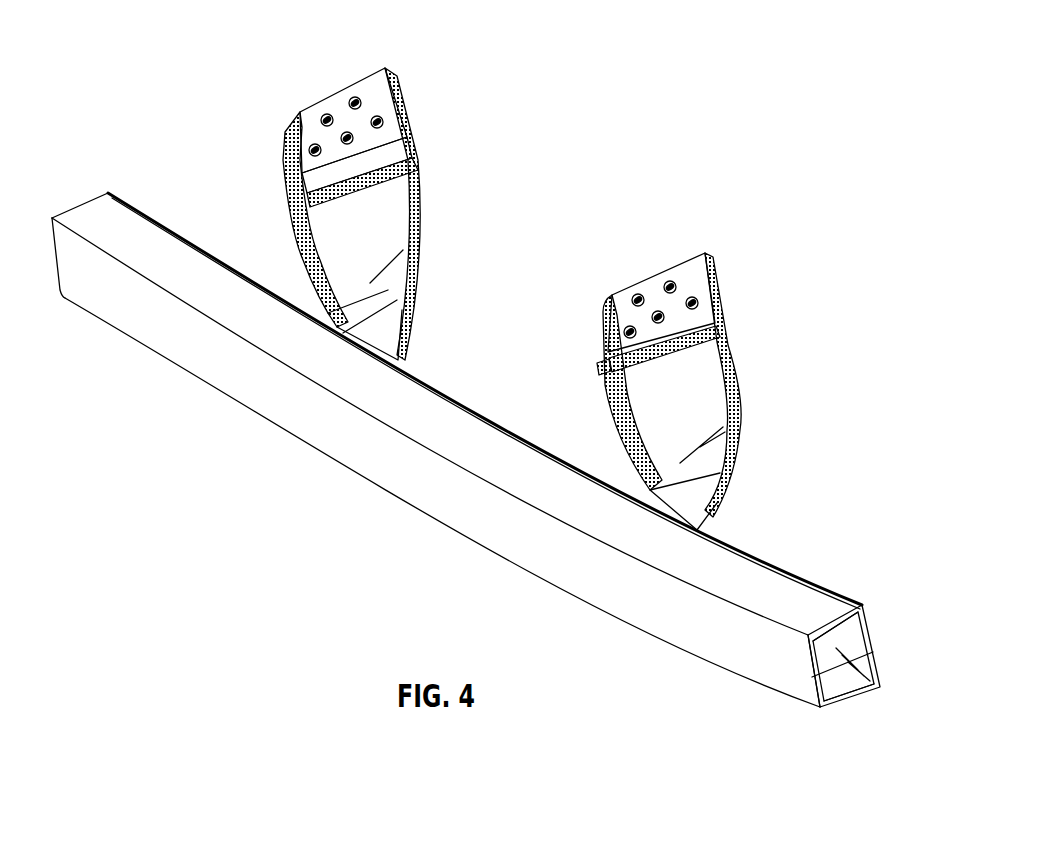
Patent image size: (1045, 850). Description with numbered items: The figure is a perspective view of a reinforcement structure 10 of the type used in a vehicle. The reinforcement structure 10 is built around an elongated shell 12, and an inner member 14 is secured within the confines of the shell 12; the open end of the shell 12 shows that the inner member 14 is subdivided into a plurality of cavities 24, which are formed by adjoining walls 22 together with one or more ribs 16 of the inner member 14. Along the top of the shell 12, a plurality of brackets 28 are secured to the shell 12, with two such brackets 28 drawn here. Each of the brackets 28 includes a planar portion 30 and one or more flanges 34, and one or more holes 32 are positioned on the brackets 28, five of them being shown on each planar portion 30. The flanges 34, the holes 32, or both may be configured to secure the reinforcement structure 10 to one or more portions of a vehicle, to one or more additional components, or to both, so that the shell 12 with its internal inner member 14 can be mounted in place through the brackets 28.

The reinforcement structure 10 is at (92, 172).
The shell 12 is at (85, 225).
The inner member 14 is at (855, 622).
The rib 16 is at (843, 650).
The wall 22 is at (806, 662).
The cavity 24 is at (862, 640).
The bracket 28 is at (299, 108).
The planar portion 30 is at (325, 255).
The hole 32 is at (356, 104).
The flange 34 is at (412, 163).